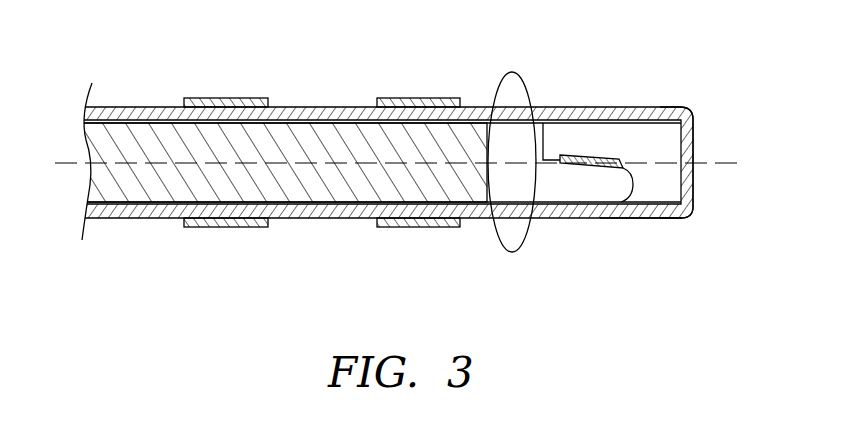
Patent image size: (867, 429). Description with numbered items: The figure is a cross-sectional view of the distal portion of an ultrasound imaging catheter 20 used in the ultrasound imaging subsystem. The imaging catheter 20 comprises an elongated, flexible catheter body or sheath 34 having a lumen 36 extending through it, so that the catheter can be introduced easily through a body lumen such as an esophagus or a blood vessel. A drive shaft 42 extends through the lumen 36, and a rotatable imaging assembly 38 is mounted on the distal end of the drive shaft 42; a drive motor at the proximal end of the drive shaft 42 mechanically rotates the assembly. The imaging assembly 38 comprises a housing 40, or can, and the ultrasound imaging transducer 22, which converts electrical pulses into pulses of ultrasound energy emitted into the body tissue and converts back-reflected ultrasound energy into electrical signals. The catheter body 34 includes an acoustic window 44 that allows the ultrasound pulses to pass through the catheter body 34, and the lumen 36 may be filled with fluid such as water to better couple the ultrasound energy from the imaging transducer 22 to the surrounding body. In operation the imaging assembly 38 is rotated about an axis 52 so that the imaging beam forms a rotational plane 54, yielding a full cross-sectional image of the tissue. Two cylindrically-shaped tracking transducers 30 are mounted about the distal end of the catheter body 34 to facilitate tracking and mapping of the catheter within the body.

The ultrasound imaging catheter 20 is at (413, 155).
The ultrasound imaging transducer 22 is at (684, 121).
The tracking transducer 30 is at (227, 228).
The catheter body 34 is at (318, 107).
The lumen 36 is at (227, 107).
The rotatable imaging assembly 38 is at (554, 150).
The housing 40 is at (570, 190).
The drive shaft 42 is at (329, 190).
The acoustic window 44 is at (618, 219).
The axis 52 is at (715, 160).
The rotational plane 54 is at (492, 101).